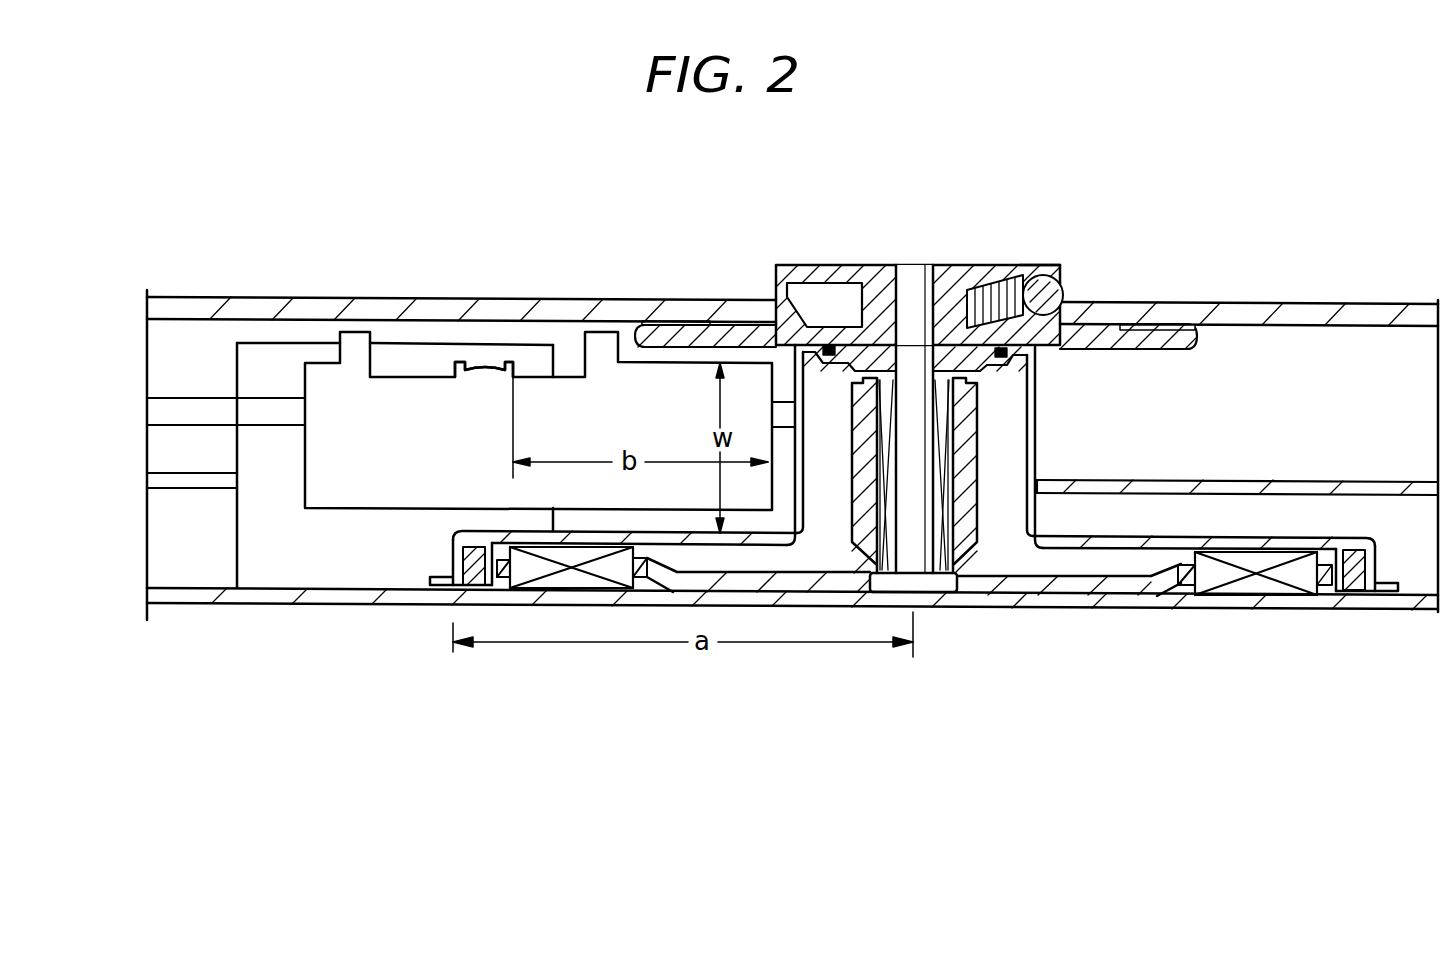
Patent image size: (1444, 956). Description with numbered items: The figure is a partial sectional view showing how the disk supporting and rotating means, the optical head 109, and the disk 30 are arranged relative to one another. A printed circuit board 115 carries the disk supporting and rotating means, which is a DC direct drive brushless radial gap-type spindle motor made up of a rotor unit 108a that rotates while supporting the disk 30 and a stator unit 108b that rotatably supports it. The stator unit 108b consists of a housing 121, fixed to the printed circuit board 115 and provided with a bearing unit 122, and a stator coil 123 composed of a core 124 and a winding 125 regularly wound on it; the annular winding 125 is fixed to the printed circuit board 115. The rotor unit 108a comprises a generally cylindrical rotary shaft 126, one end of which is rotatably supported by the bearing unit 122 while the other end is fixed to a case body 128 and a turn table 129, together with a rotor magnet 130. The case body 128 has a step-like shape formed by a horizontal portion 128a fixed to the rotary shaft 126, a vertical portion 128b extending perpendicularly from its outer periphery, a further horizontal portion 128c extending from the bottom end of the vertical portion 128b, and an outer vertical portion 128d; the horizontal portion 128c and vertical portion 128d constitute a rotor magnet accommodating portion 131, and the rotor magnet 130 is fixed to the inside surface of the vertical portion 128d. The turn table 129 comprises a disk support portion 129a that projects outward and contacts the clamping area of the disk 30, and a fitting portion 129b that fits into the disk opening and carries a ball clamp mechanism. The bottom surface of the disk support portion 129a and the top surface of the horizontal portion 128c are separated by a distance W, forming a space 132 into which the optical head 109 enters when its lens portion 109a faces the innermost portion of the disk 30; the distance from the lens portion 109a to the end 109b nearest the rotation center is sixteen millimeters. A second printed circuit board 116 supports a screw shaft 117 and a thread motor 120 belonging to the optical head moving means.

The disk 30 is at (1318, 303).
The rotor unit 108a is at (1048, 244).
The stator unit 108b is at (1036, 560).
The optical head 109 is at (352, 332).
The lens portion 109a is at (488, 361).
The end 109b is at (753, 322).
The printed circuit board 115 is at (180, 605).
The printed circuit board 116 is at (188, 490).
The screw shaft 117 is at (190, 397).
The thread motor 120 is at (258, 342).
The housing 121 is at (828, 545).
The bearing unit 122 is at (931, 575).
The stator coil 123 is at (911, 600).
The core 124 is at (643, 604).
The winding 125 is at (587, 604).
The rotary shaft 126 is at (922, 264).
The case body 128 is at (876, 437).
The horizontal portion 128a is at (1031, 388).
The vertical portion 128b is at (806, 440).
The horizontal portion 128c is at (693, 546).
The vertical portion 128d is at (452, 562).
The turn table 129 is at (830, 264).
The disk support portion 129a is at (1203, 340).
The fitting portion 129b is at (1062, 290).
The rotor magnet 130 is at (482, 604).
The rotor magnet accommodating portion 131 is at (1325, 598).
The space 132 is at (666, 523).